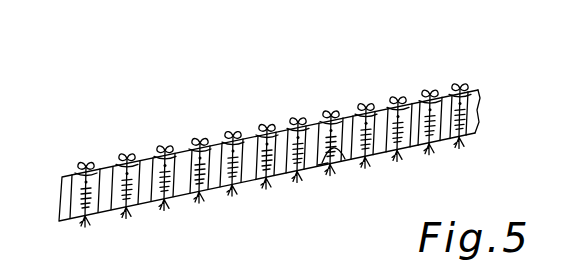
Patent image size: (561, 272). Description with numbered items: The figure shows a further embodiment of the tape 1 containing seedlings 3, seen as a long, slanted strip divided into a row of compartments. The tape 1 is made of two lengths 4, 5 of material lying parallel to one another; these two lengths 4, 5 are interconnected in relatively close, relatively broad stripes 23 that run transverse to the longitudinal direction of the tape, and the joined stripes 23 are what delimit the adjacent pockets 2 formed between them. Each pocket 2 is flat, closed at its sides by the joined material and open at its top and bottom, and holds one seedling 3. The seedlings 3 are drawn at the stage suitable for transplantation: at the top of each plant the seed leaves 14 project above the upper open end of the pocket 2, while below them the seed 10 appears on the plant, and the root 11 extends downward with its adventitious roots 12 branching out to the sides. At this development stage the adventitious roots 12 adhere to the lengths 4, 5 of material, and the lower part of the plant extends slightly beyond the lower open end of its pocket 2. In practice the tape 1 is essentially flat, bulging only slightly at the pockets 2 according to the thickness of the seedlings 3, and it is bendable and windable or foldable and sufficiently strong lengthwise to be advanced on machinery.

The tape 1 is at (273, 144).
The pocket 2 is at (231, 178).
The seedling 3 is at (331, 99).
The length of material 4 is at (462, 88).
The length of material 5 is at (468, 121).
The seed 10 is at (173, 148).
The root 11 is at (343, 161).
The adventitious roots 12 is at (323, 164).
The seed leaves 14 is at (265, 127).
The stripe 23 is at (147, 197).